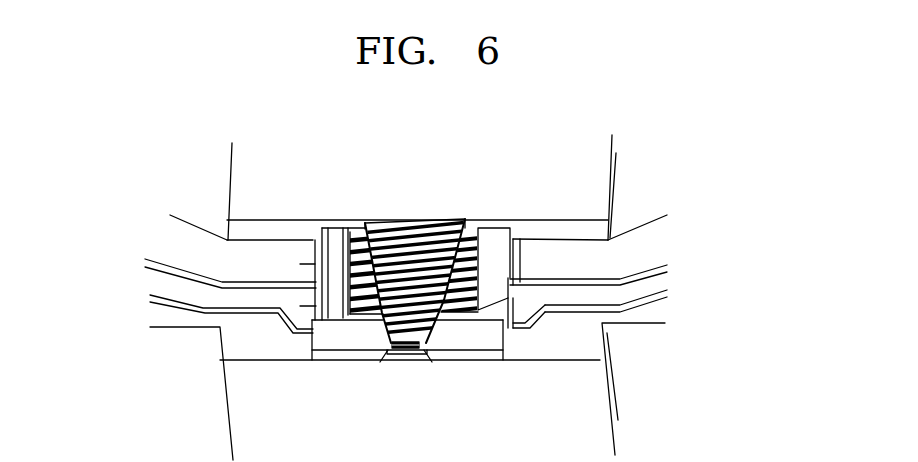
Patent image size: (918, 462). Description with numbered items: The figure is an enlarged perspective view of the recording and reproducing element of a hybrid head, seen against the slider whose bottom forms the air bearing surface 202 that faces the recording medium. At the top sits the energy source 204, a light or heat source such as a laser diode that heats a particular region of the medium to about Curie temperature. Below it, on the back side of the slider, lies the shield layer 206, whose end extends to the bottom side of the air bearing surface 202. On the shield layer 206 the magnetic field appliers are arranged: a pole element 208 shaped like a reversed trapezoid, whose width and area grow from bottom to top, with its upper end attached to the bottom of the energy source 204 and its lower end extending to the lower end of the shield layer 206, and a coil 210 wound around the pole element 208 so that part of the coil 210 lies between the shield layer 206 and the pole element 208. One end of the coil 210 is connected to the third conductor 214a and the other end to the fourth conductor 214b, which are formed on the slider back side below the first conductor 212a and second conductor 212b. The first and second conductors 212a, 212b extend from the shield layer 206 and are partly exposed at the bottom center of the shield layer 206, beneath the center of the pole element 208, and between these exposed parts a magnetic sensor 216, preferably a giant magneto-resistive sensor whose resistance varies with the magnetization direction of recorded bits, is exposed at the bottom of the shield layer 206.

The air bearing surface 202 is at (597, 397).
The energy source 204 is at (240, 190).
The shield layer 206 is at (487, 333).
The pole element 208 is at (379, 224).
The coil 210 is at (440, 230).
The first conductor 212a is at (175, 280).
The second conductor 212b is at (643, 248).
The third conductor 214a is at (183, 292).
The fourth conductor 214b is at (640, 293).
The magnetic sensor 216 is at (407, 363).